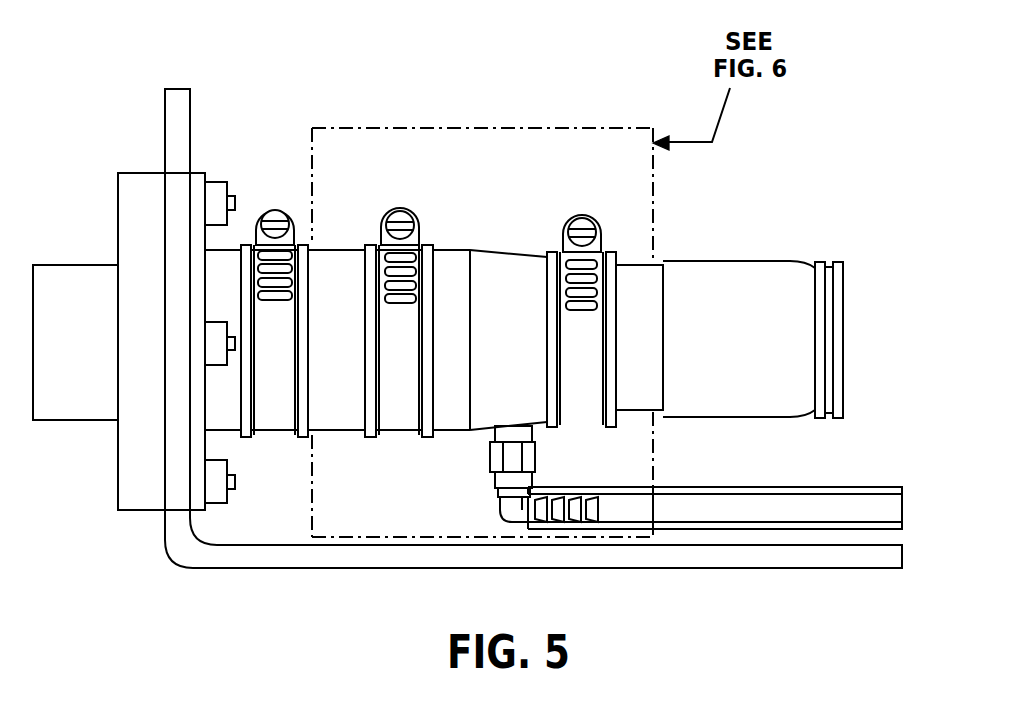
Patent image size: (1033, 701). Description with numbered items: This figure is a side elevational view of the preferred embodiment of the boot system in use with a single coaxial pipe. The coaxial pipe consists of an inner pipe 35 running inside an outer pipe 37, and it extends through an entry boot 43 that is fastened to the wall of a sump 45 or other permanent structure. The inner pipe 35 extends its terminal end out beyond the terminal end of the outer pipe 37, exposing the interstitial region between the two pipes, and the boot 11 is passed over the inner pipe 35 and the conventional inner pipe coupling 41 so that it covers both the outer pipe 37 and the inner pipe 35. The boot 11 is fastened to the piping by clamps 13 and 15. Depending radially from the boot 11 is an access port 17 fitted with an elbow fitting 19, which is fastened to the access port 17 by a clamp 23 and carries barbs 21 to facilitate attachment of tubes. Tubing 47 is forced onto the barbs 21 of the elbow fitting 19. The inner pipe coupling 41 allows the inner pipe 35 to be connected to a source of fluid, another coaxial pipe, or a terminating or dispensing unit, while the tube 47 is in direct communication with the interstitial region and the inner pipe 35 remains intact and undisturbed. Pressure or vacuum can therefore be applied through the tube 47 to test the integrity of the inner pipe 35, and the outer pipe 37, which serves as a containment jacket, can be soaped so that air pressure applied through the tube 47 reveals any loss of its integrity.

The boot 11 is at (510, 252).
The clamp 13 is at (398, 208).
The clamp 15 is at (590, 214).
The access port 17 is at (499, 492).
The elbow fitting 19 is at (506, 512).
The barbs 21 is at (592, 498).
The clamp 23 is at (533, 461).
The inner pipe 35 is at (638, 265).
The outer pipe 37 is at (338, 250).
The inner pipe coupling 41 is at (748, 262).
The entry boot 43 is at (232, 248).
The sump 45 is at (165, 135).
The tubing 47 is at (852, 487).